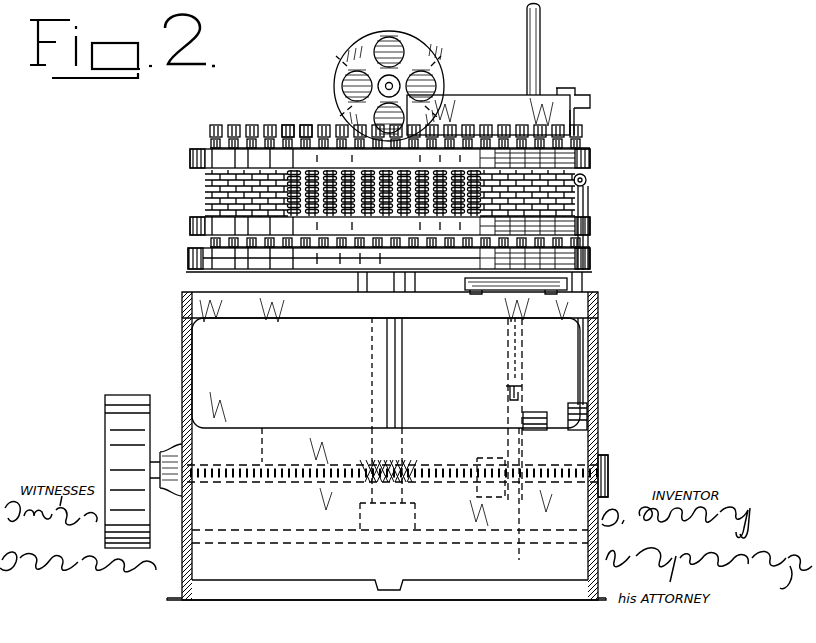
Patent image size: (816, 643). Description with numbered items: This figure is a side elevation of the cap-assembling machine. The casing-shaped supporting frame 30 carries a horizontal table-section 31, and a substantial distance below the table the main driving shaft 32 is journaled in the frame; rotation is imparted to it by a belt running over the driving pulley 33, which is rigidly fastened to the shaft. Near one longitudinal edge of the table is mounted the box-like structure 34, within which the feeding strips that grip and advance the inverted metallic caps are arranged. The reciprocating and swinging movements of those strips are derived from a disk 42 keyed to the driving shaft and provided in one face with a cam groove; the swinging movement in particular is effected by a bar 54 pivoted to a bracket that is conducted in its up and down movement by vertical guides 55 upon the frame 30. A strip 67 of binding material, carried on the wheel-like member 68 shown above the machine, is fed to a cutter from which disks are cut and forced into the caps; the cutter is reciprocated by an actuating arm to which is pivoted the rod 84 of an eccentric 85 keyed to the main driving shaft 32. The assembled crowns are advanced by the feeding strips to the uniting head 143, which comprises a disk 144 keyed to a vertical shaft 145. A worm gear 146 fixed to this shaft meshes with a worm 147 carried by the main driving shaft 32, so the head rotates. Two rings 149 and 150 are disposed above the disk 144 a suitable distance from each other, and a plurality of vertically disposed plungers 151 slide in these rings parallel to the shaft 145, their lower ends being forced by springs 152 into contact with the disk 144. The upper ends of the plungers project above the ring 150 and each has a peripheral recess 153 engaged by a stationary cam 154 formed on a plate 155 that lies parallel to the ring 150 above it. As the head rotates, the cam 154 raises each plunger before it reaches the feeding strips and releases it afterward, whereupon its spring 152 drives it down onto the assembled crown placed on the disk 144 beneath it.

The supporting frame 30 is at (182, 332).
The table-section 31 is at (582, 306).
The main driving shaft 32 is at (608, 470).
The driving pulley 33 is at (105, 405).
The box-like structure 34 is at (470, 280).
The disk 42 is at (538, 411).
The bar 54 is at (508, 352).
The vertical guides 55 is at (508, 372).
The strip 67 is at (387, 44).
The roller wheel 68 is at (422, 40).
The rod 84 is at (583, 348).
The eccentric 85 is at (588, 410).
The uniting head 143 is at (588, 164).
The disk 144 is at (592, 262).
The vertical shaft 145 is at (372, 355).
The worm gear 146 is at (260, 428).
The worm 147 is at (404, 458).
The ring 149 is at (190, 224).
The ring 150 is at (190, 158).
The plungers 151 is at (305, 126).
The springs 152 is at (205, 180).
The peripheral recess 153 is at (210, 137).
The stationary cam 154 is at (574, 125).
The plate 155 is at (492, 97).